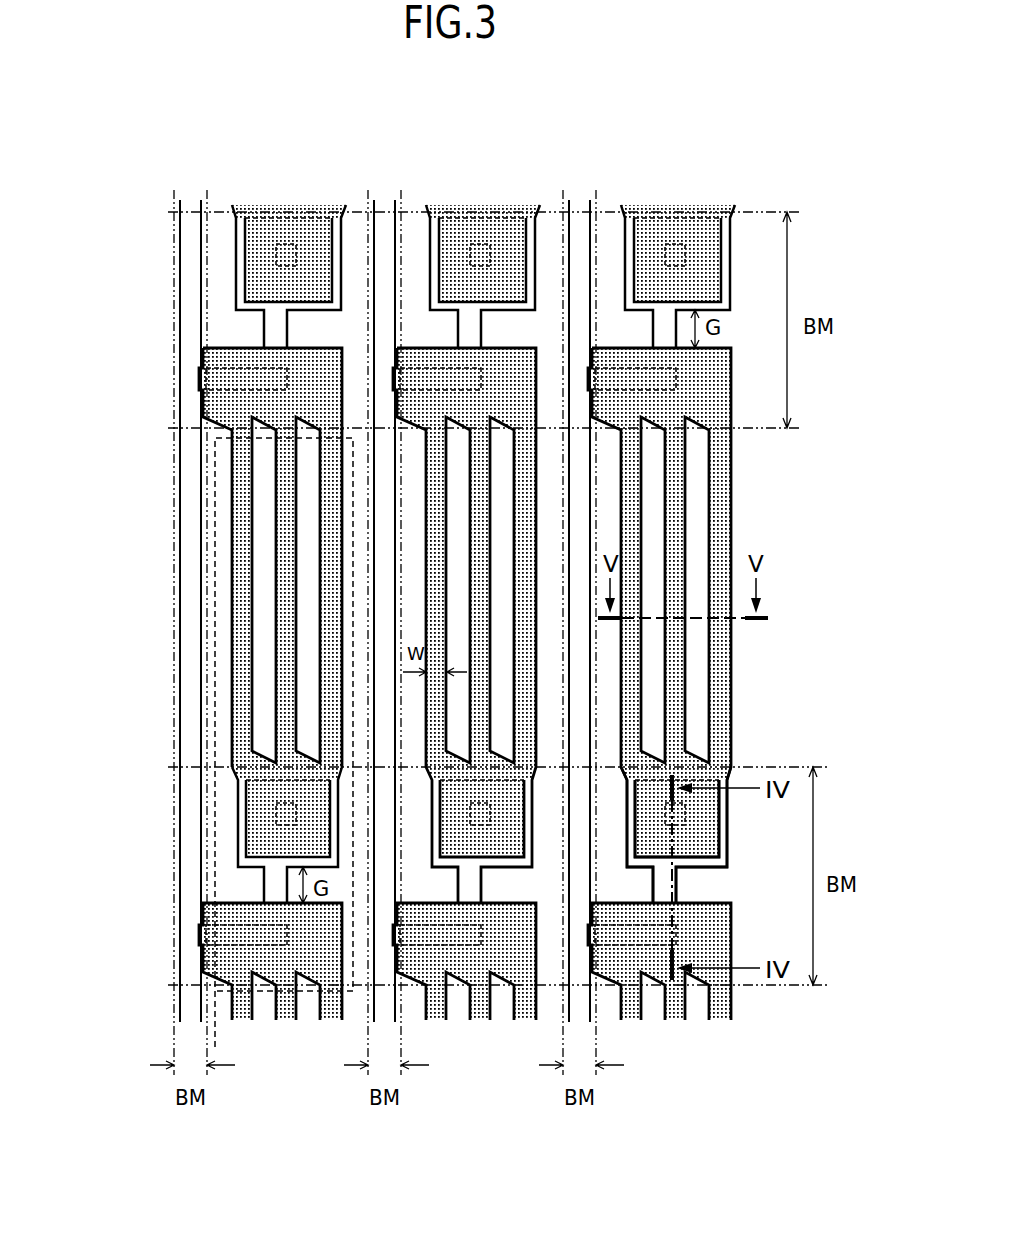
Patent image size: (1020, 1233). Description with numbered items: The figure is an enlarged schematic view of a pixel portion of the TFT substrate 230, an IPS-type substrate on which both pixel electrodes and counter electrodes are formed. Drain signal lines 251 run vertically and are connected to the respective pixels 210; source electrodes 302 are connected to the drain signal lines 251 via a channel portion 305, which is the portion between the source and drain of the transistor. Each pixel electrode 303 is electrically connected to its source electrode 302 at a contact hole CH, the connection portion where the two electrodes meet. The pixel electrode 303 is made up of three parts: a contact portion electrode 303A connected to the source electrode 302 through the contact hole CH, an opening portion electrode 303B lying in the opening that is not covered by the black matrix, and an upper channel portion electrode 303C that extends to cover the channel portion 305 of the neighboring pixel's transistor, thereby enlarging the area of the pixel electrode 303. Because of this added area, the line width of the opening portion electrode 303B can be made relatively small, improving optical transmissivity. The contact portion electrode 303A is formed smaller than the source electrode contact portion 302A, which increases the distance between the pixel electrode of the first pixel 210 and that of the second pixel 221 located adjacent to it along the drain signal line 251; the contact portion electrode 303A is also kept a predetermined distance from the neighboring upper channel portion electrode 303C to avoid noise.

The TFT substrate 230 is at (504, 146).
The contact portion electrode 303A is at (258, 250).
The drain signal line 251 is at (190, 325).
The channel portion 305 is at (261, 361).
The upper channel portion electrode 303C is at (275, 409).
The pixel electrode 303 is at (230, 565).
The opening portion electrode 303B is at (243, 600).
The pixel 210 is at (213, 688).
The source electrode 302 is at (268, 882).
The source electrode contact portion 302A is at (722, 832).
The second pixel 221 is at (205, 1015).
The contact hole CH is at (288, 242).